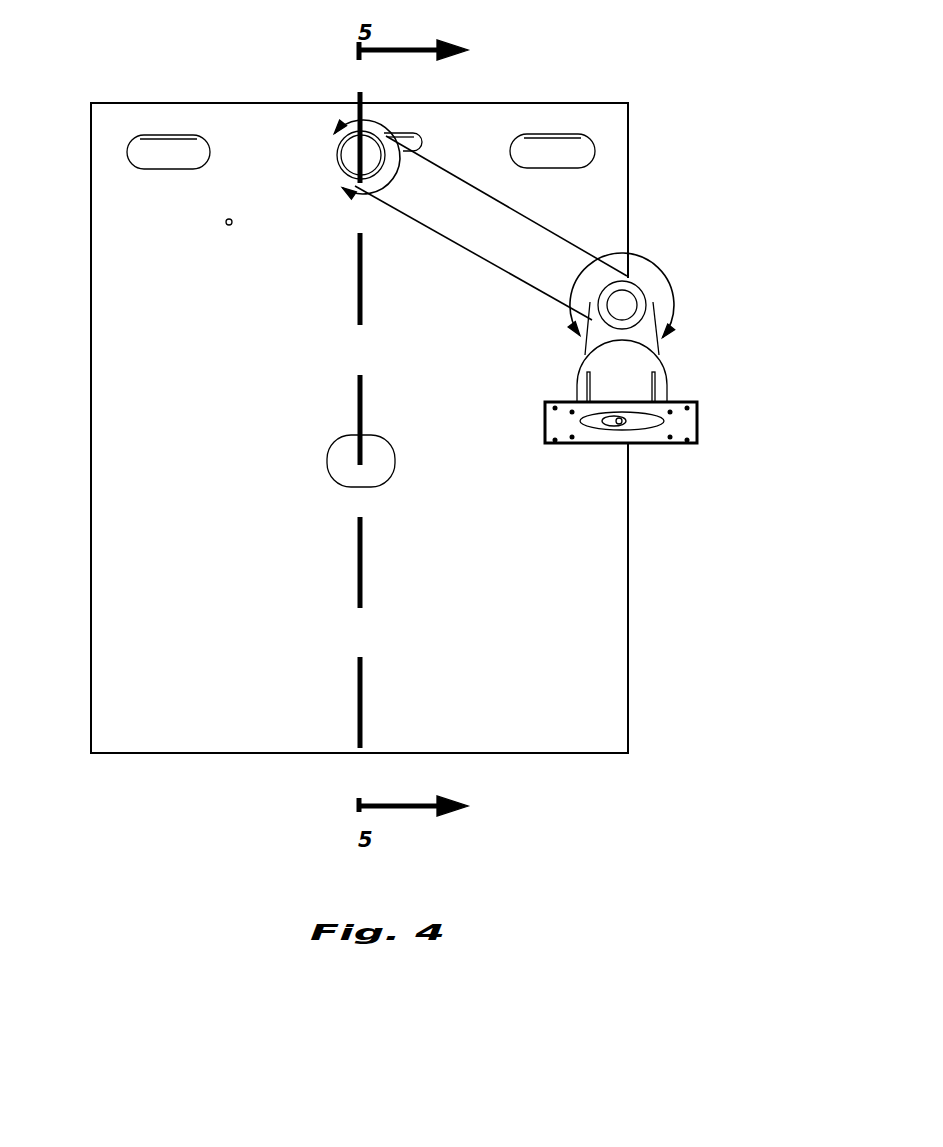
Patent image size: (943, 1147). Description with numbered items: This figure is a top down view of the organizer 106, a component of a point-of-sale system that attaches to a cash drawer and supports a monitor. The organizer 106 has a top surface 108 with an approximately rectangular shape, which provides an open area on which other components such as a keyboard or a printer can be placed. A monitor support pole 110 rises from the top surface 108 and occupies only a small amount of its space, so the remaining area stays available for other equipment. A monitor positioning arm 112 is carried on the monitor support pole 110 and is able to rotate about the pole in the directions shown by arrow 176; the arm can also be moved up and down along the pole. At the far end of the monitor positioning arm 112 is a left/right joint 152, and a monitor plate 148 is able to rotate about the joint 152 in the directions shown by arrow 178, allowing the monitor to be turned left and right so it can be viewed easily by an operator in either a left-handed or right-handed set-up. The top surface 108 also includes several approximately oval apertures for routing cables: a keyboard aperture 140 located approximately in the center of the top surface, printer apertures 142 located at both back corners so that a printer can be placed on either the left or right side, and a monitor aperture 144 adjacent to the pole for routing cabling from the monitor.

The organizer 106 is at (704, 594).
The top surface 108 is at (596, 728).
The monitor support pole 110 is at (345, 157).
The monitor positioning arm 112 is at (523, 238).
The keyboard aperture 140 is at (383, 463).
The printer apertures 142 is at (158, 152).
The monitor aperture 144 is at (424, 150).
The monitor plate 148 is at (700, 428).
The left/right joint 152 is at (626, 304).
The arrow 176 is at (348, 112).
The arrow 178 is at (656, 267).